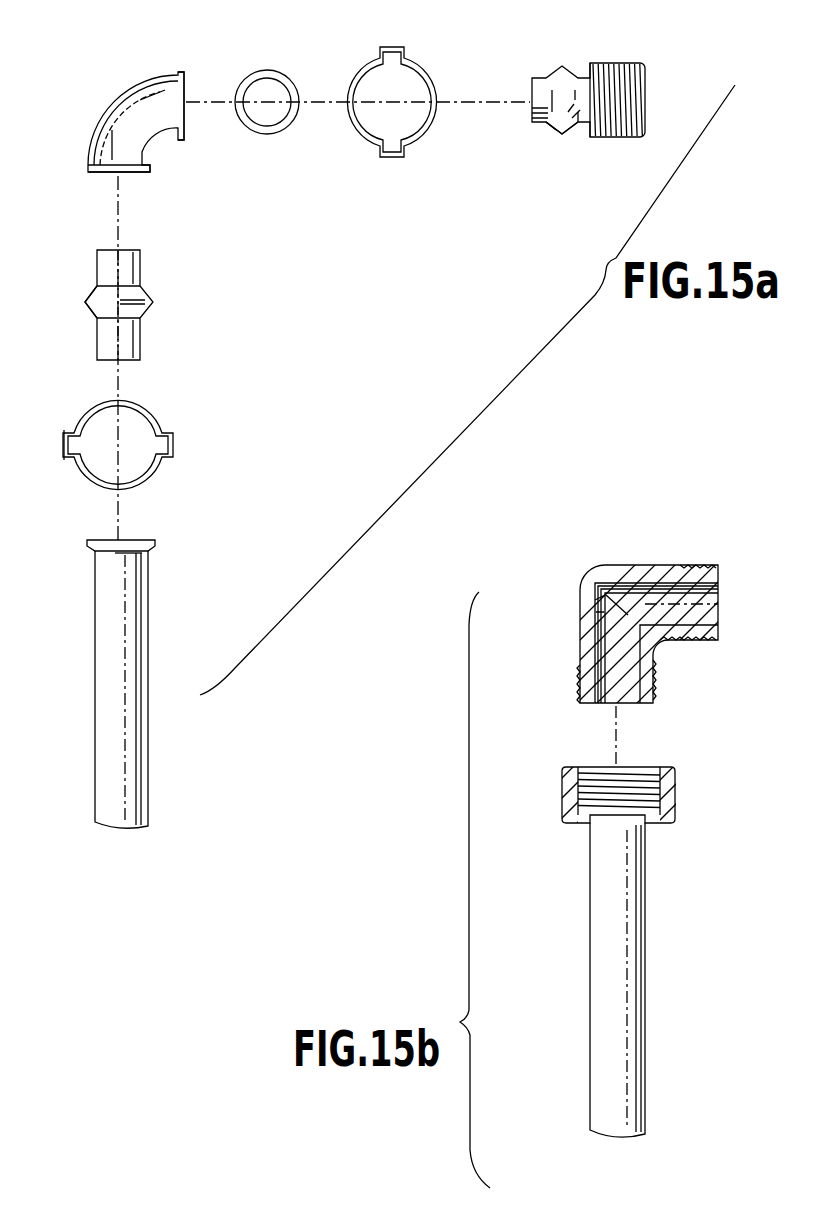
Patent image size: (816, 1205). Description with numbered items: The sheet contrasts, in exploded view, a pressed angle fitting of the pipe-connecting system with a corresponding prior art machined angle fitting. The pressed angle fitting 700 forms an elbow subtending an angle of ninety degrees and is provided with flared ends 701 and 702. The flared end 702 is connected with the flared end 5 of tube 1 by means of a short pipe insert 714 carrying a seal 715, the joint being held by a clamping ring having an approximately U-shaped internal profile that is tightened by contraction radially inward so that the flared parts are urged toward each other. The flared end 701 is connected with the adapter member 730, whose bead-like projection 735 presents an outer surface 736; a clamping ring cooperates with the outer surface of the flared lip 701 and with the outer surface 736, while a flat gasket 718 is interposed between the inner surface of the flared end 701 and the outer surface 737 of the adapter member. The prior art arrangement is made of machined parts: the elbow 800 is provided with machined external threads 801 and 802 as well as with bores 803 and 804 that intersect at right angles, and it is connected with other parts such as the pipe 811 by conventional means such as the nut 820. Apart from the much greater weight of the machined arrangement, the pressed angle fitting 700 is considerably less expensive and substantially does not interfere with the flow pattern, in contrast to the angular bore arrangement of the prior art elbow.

In FIG. 15a, the pressed angle fitting 700 is at (132, 76).
In FIG. 15a, the flared end 701 is at (178, 70).
In FIG. 15a, the flared end 702 is at (88, 164).
In FIG. 15a, the flat gasket 718 is at (280, 133).
In FIG. 15a, the adapter member 730 is at (595, 52).
In FIG. 15a, the bead-like projection 735 is at (565, 142).
In FIG. 15a, the outer surface of bead-like projection 736 is at (574, 130).
In FIG. 15a, the outer surface 737 is at (556, 130).
In FIG. 15a, the short pipe insert 714 is at (145, 322).
In FIG. 15a, the seal 715 is at (84, 302).
In FIG. 15a, the flared end 5 is at (90, 546).
In FIG. 15a, the tube 1 is at (97, 716).
In FIG. 15b, the elbow 800 is at (590, 567).
In FIG. 15b, the external threads 801 is at (700, 565).
In FIG. 15b, the external threads 802 is at (580, 688).
In FIG. 15b, the bore 803 is at (650, 585).
In FIG. 15b, the bore 804 is at (600, 625).
In FIG. 15b, the nut 820 is at (676, 808).
In FIG. 15b, the pipe 811 is at (623, 953).